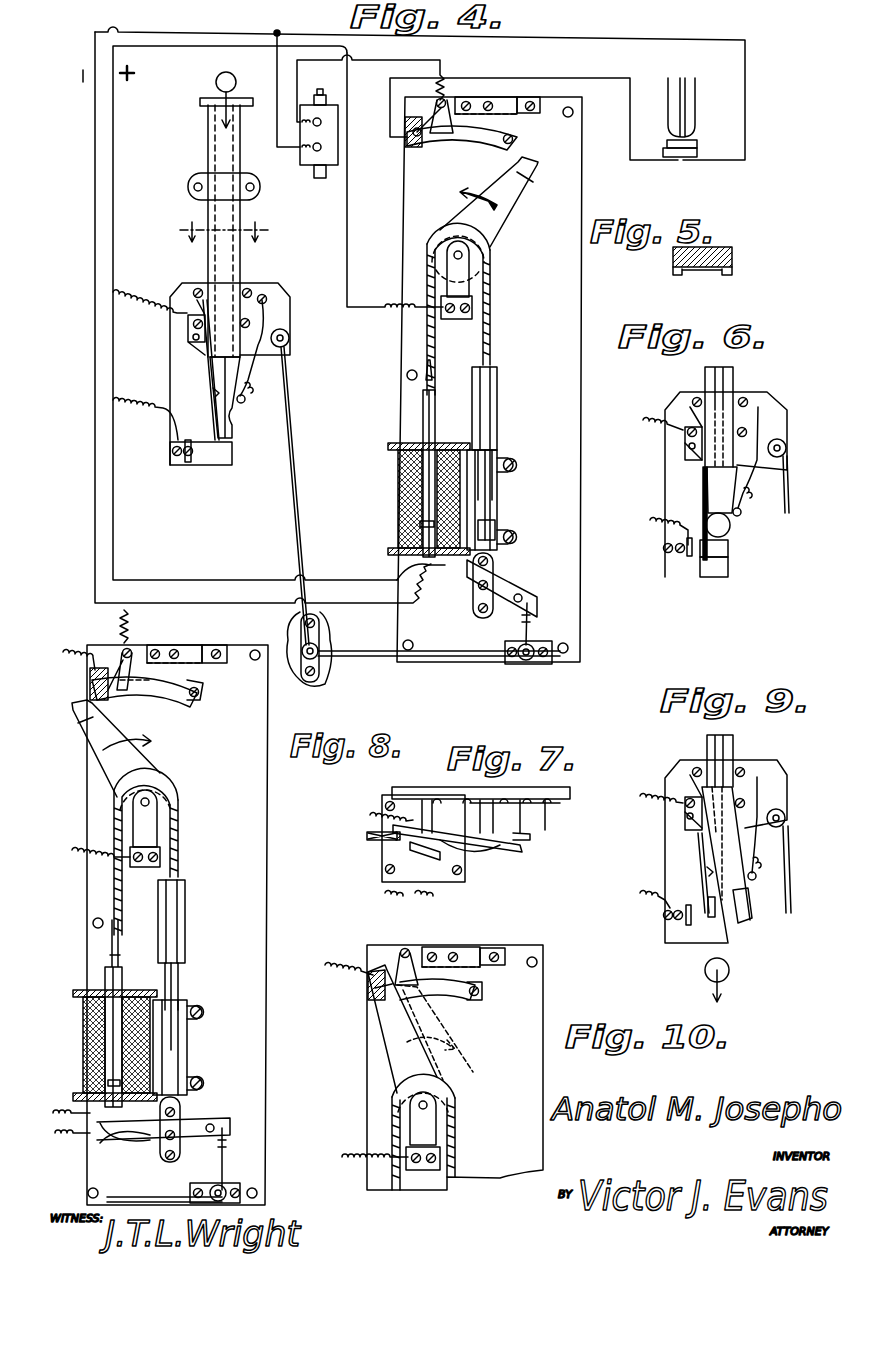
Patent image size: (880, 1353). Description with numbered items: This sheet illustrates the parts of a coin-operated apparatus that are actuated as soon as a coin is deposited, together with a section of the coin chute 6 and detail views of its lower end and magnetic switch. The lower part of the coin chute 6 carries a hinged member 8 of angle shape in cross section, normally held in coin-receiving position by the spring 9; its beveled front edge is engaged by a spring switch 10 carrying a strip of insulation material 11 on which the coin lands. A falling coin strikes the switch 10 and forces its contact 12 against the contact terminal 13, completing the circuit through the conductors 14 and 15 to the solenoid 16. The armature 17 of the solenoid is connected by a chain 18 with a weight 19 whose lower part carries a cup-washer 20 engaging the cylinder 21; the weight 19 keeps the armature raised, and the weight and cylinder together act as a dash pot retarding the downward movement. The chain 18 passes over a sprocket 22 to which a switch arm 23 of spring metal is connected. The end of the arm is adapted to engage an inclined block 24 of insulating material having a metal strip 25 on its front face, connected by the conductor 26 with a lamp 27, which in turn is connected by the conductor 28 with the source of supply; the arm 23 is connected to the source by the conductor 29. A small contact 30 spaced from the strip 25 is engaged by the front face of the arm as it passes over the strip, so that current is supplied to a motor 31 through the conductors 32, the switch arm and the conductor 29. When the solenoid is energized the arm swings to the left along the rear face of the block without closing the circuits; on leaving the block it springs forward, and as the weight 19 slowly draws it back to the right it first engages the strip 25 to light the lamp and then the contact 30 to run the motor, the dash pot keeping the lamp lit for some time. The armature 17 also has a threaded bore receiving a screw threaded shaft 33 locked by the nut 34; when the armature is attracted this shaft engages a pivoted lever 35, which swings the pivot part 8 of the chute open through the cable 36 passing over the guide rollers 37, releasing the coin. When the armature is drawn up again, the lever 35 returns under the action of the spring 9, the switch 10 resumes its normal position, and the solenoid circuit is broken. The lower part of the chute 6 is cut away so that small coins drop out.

In FIG. 4, the plunger rod 6 is at (206, 143).
In FIG. 5, the plunger rod 6 is at (734, 270).
In FIG. 6, the plunger rod 6 is at (735, 370).
In FIG. 9, the plunger rod 6 is at (735, 740).
In FIG. 4, the hinged member 8 is at (238, 400).
In FIG. 6, the hinged member 8 is at (740, 486).
In FIG. 9, the hinged member 8 is at (752, 918).
In FIG. 4, the spring 9 is at (270, 312).
In FIG. 6, the spring 9 is at (765, 425).
In FIG. 9, the spring 9 is at (765, 794).
In FIG. 4, the spring switch 10 is at (205, 383).
In FIG. 6, the spring switch 10 is at (702, 500).
In FIG. 9, the spring switch 10 is at (700, 852).
In FIG. 4, the strip of insulation material 11 is at (214, 392).
In FIG. 6, the strip of insulation material 11 is at (728, 565).
In FIG. 9, the strip of insulation material 11 is at (708, 872).
In FIG. 4, the contact 12 is at (200, 470).
In FIG. 6, the contact 12 is at (708, 578).
In FIG. 9, the contact 12 is at (728, 945).
In FIG. 4, the contact terminal 13 is at (190, 454).
In FIG. 6, the contact terminal 13 is at (688, 560).
In FIG. 9, the contact terminal 13 is at (688, 922).
In FIG. 4, the conductor 14 is at (113, 258).
In FIG. 6, the conductor 14 is at (645, 420).
In FIG. 9, the conductor 14 is at (650, 796).
In FIG. 4, the conductor 15 is at (93, 326).
In FIG. 8, the conductor 15 is at (68, 1142).
In FIG. 7, the conductor 15 is at (425, 890).
In FIG. 4, the solenoid 16 is at (398, 492).
In FIG. 8, the solenoid 16 is at (83, 1020).
In FIG. 7, the solenoid 16 is at (385, 885).
In FIG. 4, the armature 17 is at (423, 416).
In FIG. 8, the armature 17 is at (122, 980).
In FIG. 4, the chain 18 is at (490, 322).
In FIG. 8, the chain 18 is at (122, 892).
In FIG. 10, the chain 18 is at (458, 1148).
In FIG. 4, the weight 19 is at (497, 400).
In FIG. 8, the weight 19 is at (185, 930).
In FIG. 4, the cup-washer 20 is at (517, 538).
In FIG. 4, the cylinder 21 is at (497, 493).
In FIG. 8, the cylinder 21 is at (187, 1048).
In FIG. 4, the sprocket 22 is at (473, 275).
In FIG. 8, the sprocket 22 is at (160, 836).
In FIG. 10, the sprocket 22 is at (440, 1115).
In FIG. 4, the switch arm 23 is at (507, 197).
In FIG. 8, the switch arm 23 is at (128, 762).
In FIG. 7, the switch arm 23 is at (370, 833).
In FIG. 10, the switch arm 23 is at (393, 1028).
In FIG. 4, the block 24 is at (503, 122).
In FIG. 8, the block 24 is at (188, 668).
In FIG. 7, the block 24 is at (500, 845).
In FIG. 10, the block 24 is at (470, 955).
In FIG. 4, the metal strip 25 is at (470, 148).
In FIG. 8, the metal strip 25 is at (168, 700).
In FIG. 7, the metal strip 25 is at (470, 855).
In FIG. 10, the metal strip 25 is at (460, 1000).
In FIG. 4, the conductor 26 is at (512, 90).
In FIG. 8, the conductor 26 is at (75, 672).
In FIG. 7, the conductor 26 is at (370, 852).
In FIG. 10, the conductor 26 is at (328, 970).
In FIG. 4, the lamp 27 is at (690, 110).
In FIG. 4, the conductor 28 is at (598, 40).
In FIG. 4, the conductor 29 is at (348, 292).
In FIG. 8, the conductor 29 is at (72, 870).
In FIG. 10, the conductor 29 is at (350, 1152).
In FIG. 4, the small contact 30 is at (440, 140).
In FIG. 8, the small contact 30 is at (118, 684).
In FIG. 7, the small contact 30 is at (430, 850).
In FIG. 10, the small contact 30 is at (420, 990).
In FIG. 4, the motor 31 is at (305, 160).
In FIG. 4, the conductors 32 is at (277, 66).
In FIG. 8, the conductors 32 is at (130, 617).
In FIG. 7, the conductors 32 is at (372, 812).
In FIG. 4, the screw threaded shaft 33 is at (398, 534).
In FIG. 8, the screw threaded shaft 33 is at (100, 1148).
In FIG. 4, the nut 34 is at (418, 522).
In FIG. 8, the nut 34 is at (108, 1083).
In FIG. 4, the pivoted lever 35 is at (464, 578).
In FIG. 8, the pivoted lever 35 is at (188, 1125).
In FIG. 4, the cable 36 is at (372, 658).
In FIG. 6, the cable 36 is at (790, 486).
In FIG. 9, the cable 36 is at (792, 850).
In FIG. 8, the cable 36 is at (175, 1197).
In FIG. 4, the guide rollers 37 is at (290, 338).
In FIG. 6, the guide rollers 37 is at (787, 448).
In FIG. 9, the guide rollers 37 is at (786, 818).
In FIG. 8, the guide rollers 37 is at (228, 1185).